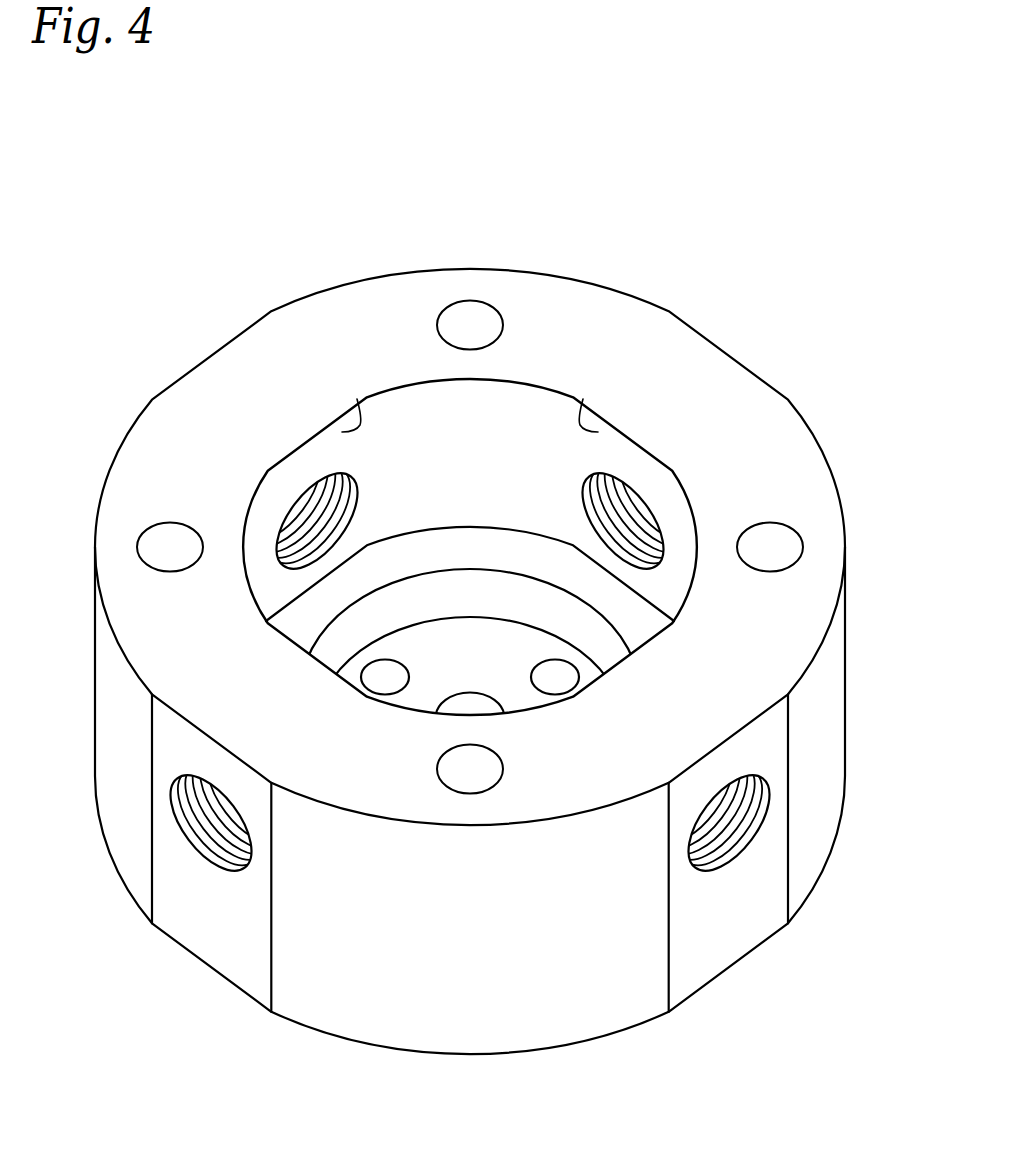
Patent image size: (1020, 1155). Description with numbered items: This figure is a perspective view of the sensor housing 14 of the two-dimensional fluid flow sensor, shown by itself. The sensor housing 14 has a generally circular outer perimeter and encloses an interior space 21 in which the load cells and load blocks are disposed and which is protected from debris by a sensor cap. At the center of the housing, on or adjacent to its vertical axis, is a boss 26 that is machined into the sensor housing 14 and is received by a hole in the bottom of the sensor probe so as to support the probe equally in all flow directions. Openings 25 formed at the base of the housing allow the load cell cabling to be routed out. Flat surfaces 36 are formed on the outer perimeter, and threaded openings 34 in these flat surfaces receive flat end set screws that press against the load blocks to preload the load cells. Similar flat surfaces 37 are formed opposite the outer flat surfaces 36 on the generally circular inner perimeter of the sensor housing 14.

The sensor housing 14 is at (544, 196).
The interior space 21 is at (487, 548).
The openings 25 is at (383, 677).
The boss 26 is at (457, 703).
The threaded openings 34 is at (299, 496).
The flat surfaces 36 is at (222, 340).
The flat surfaces 37 is at (357, 398).